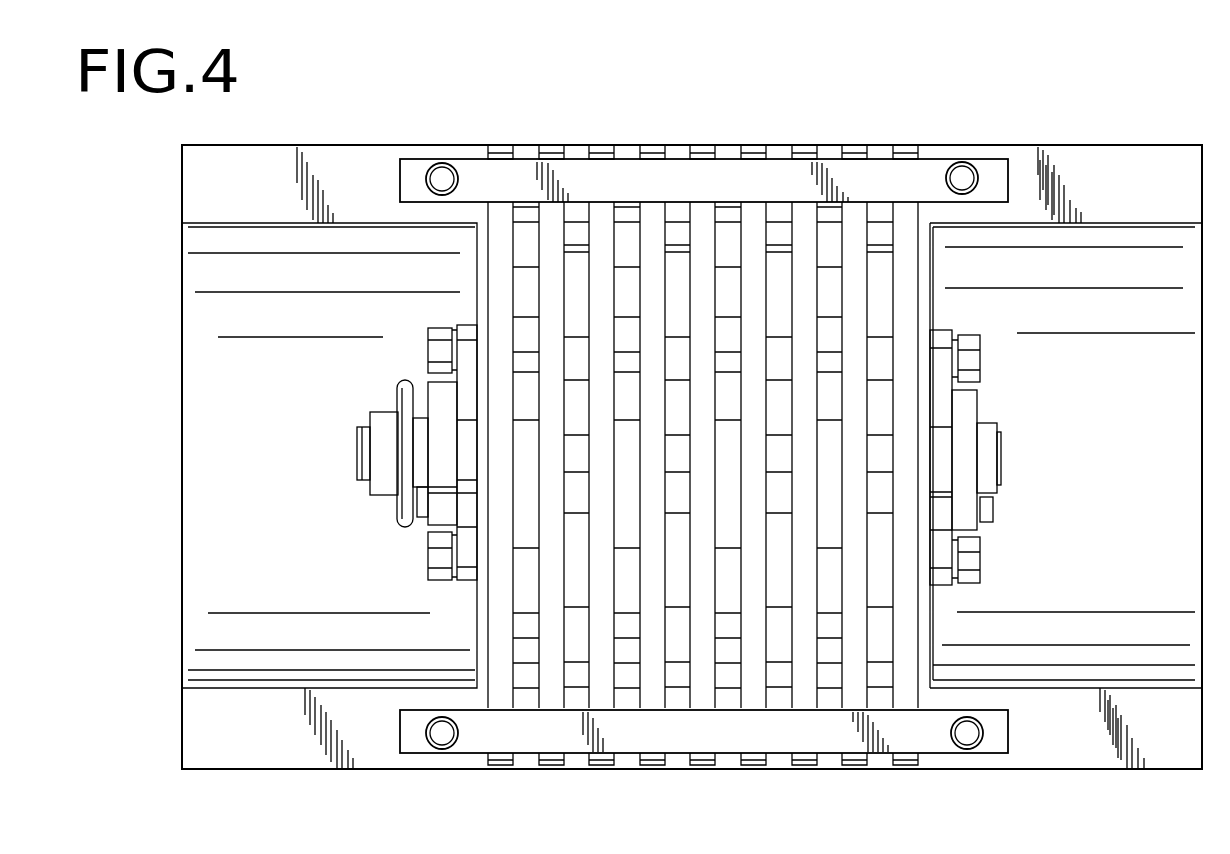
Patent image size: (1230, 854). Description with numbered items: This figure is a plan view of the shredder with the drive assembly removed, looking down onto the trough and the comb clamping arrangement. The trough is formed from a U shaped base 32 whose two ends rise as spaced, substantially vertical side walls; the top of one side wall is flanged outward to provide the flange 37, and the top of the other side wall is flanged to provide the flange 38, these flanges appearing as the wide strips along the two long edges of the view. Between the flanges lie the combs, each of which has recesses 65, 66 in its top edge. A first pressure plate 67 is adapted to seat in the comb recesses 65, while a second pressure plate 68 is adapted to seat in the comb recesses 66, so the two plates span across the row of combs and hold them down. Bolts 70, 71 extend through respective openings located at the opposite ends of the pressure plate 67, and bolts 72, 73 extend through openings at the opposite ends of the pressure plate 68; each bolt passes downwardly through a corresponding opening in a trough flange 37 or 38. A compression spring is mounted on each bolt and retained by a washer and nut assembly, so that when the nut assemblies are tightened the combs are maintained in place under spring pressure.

The U shaped base 32 is at (316, 452).
The flange 37 is at (1100, 735).
The flange 38 is at (1078, 182).
The comb recesses 65 is at (551, 156).
The comb recesses 66 is at (556, 757).
The pressure plate 67 is at (780, 172).
The pressure plate 68 is at (828, 732).
The bolt 70 is at (440, 174).
The bolt 71 is at (963, 174).
The bolt 72 is at (442, 735).
The bolt 73 is at (967, 736).